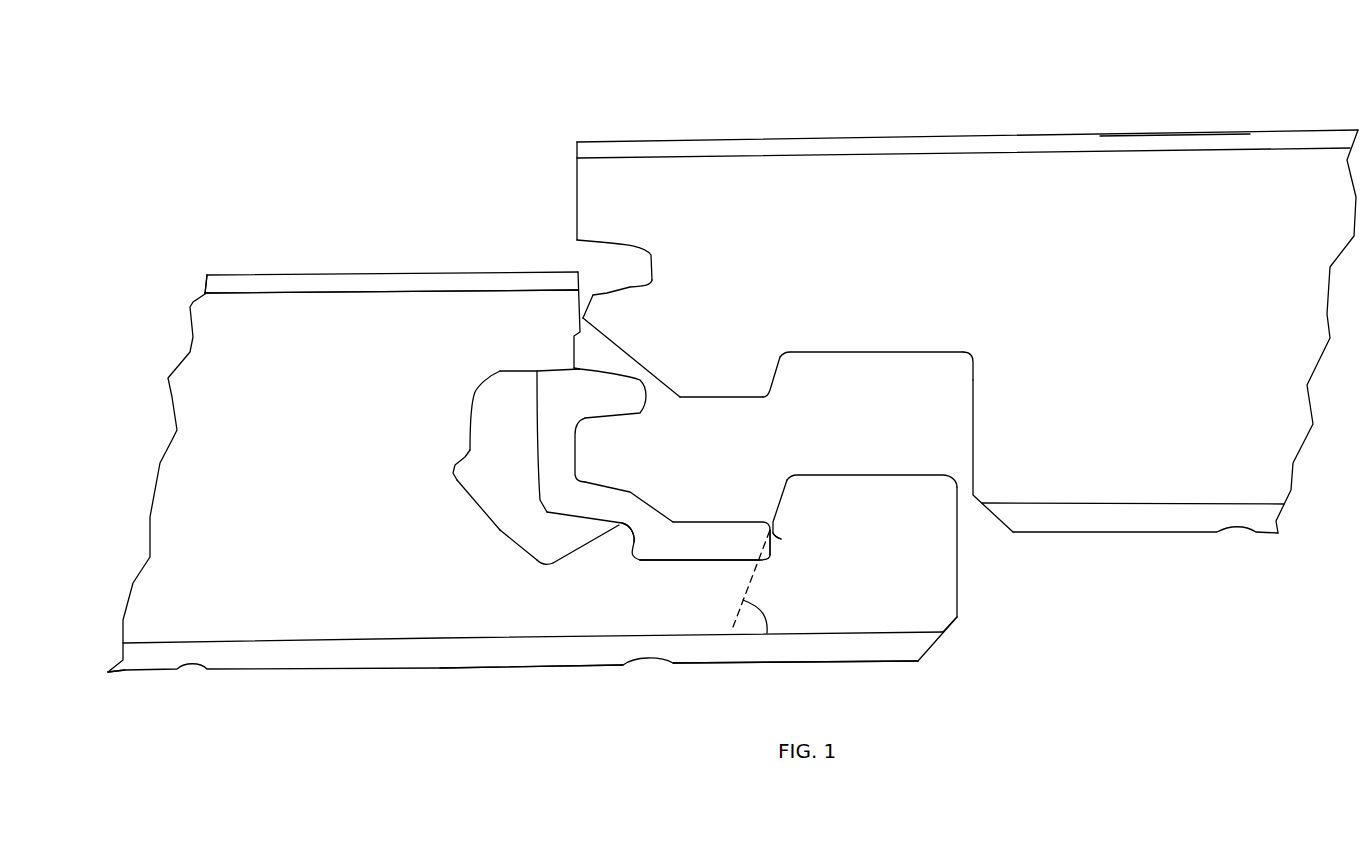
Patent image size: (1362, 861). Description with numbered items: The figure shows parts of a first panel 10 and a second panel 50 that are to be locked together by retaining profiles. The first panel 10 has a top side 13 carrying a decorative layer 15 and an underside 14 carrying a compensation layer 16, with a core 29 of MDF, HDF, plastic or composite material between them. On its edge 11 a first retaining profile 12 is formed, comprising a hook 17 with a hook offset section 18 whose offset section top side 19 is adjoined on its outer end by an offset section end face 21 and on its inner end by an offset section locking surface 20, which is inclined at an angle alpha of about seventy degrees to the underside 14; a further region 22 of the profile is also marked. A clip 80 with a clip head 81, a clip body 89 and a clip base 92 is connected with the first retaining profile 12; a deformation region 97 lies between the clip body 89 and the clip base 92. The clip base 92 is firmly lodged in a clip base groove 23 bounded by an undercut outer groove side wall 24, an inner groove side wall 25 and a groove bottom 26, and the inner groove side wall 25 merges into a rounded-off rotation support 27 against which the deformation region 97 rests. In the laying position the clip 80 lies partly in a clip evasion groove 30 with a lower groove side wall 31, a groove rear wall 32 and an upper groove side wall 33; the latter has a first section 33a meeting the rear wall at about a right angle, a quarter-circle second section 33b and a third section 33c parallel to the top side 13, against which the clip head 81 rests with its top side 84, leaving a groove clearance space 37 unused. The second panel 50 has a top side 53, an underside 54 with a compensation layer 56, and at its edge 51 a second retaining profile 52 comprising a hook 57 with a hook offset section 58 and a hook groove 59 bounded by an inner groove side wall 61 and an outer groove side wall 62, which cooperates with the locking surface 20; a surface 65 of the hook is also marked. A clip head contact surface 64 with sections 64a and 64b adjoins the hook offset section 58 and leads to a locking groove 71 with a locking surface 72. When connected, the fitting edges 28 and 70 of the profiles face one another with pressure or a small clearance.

The first panel 10 is at (560, 432).
The edge 11 is at (485, 242).
The first retaining profile 12 is at (572, 615).
The top side 13 is at (355, 274).
The underside 14 is at (288, 670).
The decorative layer 15 is at (293, 286).
The compensation layer 16 is at (383, 657).
The hook 17 is at (712, 623).
The hook offset section 18 is at (900, 543).
The offset section top side 19 is at (860, 475).
The offset section locking surface 20 is at (773, 512).
The offset section end face 21 is at (958, 558).
The bottom region 22 is at (613, 630).
The clip base groove 23 is at (657, 563).
The outer groove side wall 24 is at (781, 539).
The inner groove side wall 25 is at (628, 540).
The groove bottom 26 is at (707, 562).
The rotation support 27 is at (620, 529).
The fitting edge 28 is at (578, 270).
The core 29 is at (324, 477).
The clip evasion groove 30 is at (490, 464).
The lower groove side wall 31 is at (555, 566).
The groove rear wall 32 is at (488, 512).
The upper groove side wall 33 is at (473, 398).
The first section 33a is at (460, 473).
The second section 33b is at (472, 412).
The third section 33c is at (517, 368).
The groove clearance space 37 is at (476, 492).
The second panel 50 is at (922, 115).
The edge 51 is at (652, 126).
The second retaining profile 52 is at (722, 200).
The top side 53 is at (1143, 128).
The underside 54 is at (1257, 130).
The compensation layer 56 is at (1256, 522).
The hook 57 is at (833, 168).
The hook offset section 58 is at (722, 398).
The hook groove 59 is at (925, 352).
The inner groove side wall 61 is at (974, 388).
The outer groove side wall 62 is at (772, 378).
The clip head contact surface 64 is at (645, 346).
The section of clip head contact surface 64a is at (640, 378).
The section of clip head contact surface 64b is at (592, 305).
The projection top surface 65 is at (832, 352).
The fitting edge 70 is at (575, 170).
The locking groove 71 is at (620, 258).
The locking surface 72 is at (630, 287).
The clip 80 is at (537, 527).
The clip head 81 is at (610, 404).
The top side of the head 84 is at (547, 368).
The clip body 89 is at (570, 456).
The clip base 92 is at (718, 549).
The deformation region 97 is at (615, 511).
The angle alpha is at (754, 581).